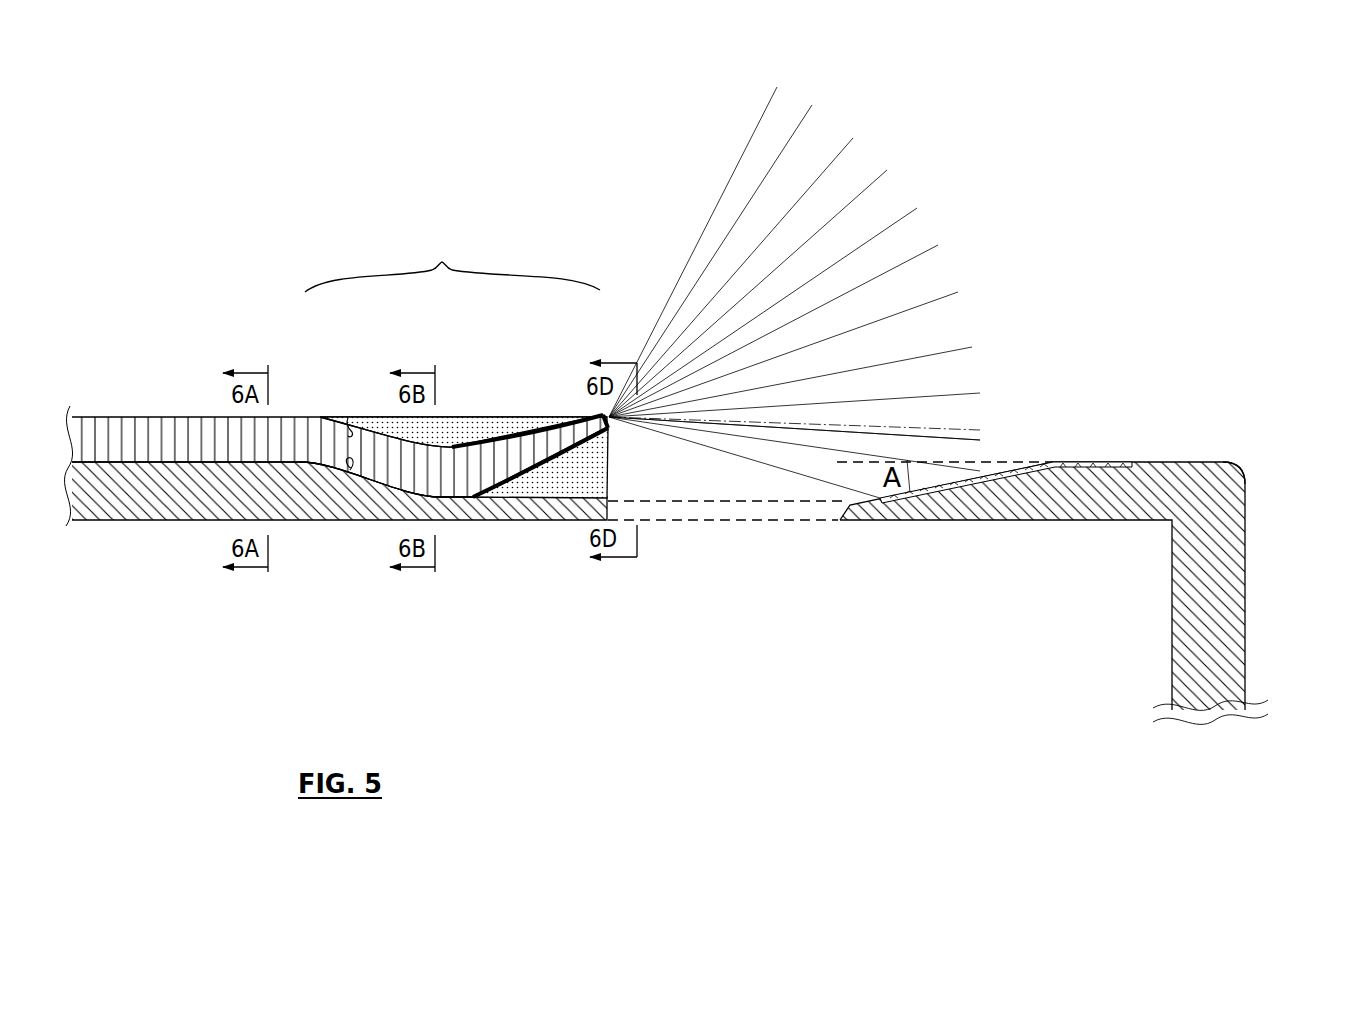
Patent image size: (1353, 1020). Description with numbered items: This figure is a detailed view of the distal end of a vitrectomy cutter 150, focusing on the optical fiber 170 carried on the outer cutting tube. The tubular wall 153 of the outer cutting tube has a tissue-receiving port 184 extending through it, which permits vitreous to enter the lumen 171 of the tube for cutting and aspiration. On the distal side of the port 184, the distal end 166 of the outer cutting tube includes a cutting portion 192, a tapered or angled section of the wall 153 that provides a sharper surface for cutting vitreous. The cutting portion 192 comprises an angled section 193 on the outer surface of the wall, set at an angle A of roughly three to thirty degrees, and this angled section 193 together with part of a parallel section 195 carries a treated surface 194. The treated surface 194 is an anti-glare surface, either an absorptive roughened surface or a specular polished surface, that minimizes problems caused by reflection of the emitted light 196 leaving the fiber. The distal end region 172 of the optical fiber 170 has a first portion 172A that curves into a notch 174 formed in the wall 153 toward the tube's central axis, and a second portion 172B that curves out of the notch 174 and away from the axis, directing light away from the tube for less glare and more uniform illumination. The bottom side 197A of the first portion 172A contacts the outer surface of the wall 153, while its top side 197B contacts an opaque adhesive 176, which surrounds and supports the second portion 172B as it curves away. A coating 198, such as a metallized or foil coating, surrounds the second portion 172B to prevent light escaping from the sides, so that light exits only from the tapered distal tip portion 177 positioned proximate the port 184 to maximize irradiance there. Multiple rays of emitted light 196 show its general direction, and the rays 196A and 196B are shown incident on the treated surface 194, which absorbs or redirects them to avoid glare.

The cutter 150 is at (1160, 275).
The tubular wall 153 is at (155, 498).
The distal end of the outer cutting tube 166 is at (1250, 578).
The optical fiber 170 is at (128, 417).
The lumen 171 is at (1027, 686).
The distal end region 172 is at (479, 406).
The first portion 172A is at (378, 460).
The second portion 172B is at (540, 452).
The notch 174 is at (592, 482).
The opaque adhesive 176 is at (455, 417).
The tapered distal tip portion 177 is at (608, 412).
The tissue-receiving port 184 is at (680, 522).
The cutting portion 192 is at (1054, 549).
The angled section 193 is at (874, 487).
The treated surface 194 is at (1072, 462).
The parallel section 195 is at (1165, 462).
The emitted light 196 is at (778, 325).
The ray 196A is at (772, 462).
The ray 196B is at (830, 455).
The bottom side 197A is at (350, 470).
The top side 197B is at (345, 417).
The coating 198 is at (490, 418).